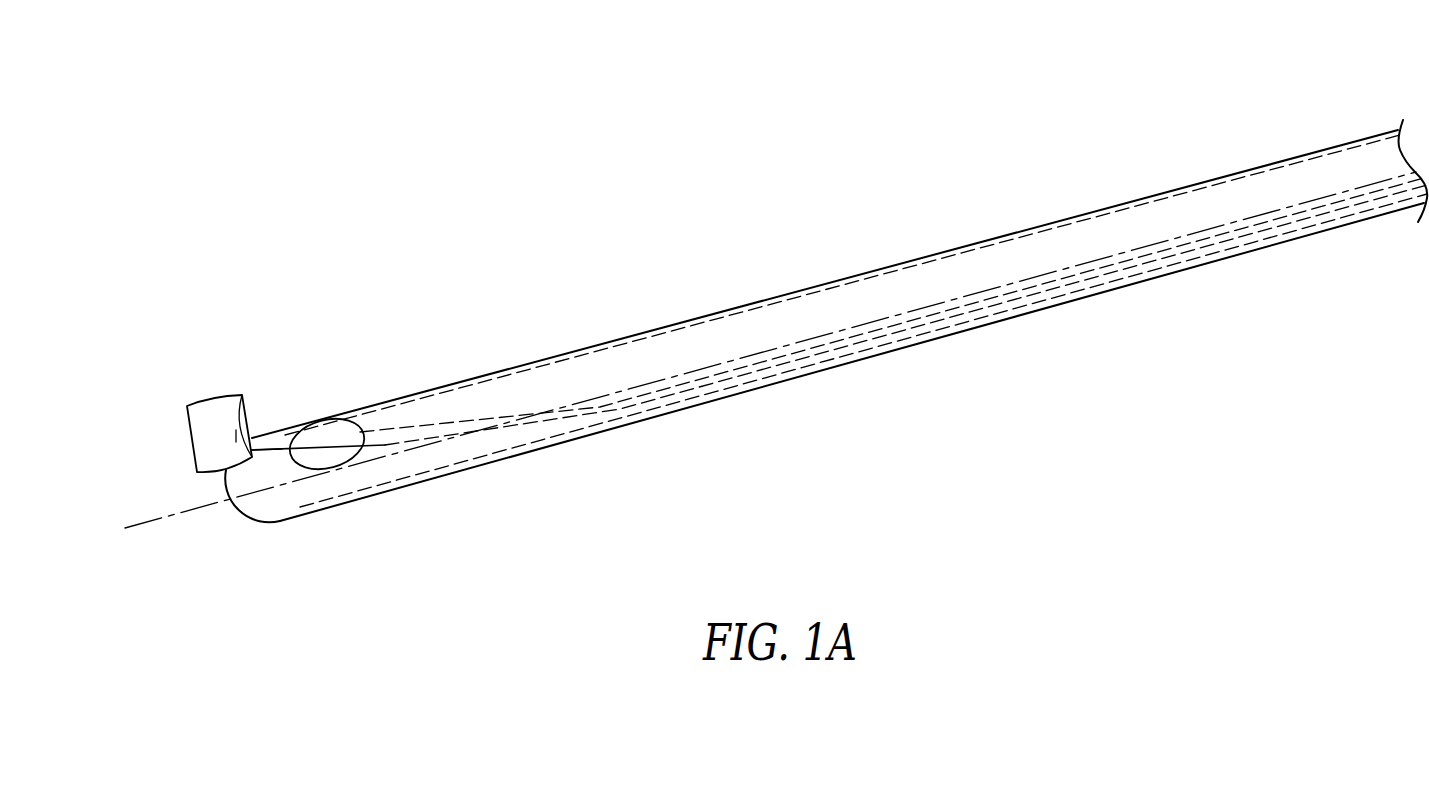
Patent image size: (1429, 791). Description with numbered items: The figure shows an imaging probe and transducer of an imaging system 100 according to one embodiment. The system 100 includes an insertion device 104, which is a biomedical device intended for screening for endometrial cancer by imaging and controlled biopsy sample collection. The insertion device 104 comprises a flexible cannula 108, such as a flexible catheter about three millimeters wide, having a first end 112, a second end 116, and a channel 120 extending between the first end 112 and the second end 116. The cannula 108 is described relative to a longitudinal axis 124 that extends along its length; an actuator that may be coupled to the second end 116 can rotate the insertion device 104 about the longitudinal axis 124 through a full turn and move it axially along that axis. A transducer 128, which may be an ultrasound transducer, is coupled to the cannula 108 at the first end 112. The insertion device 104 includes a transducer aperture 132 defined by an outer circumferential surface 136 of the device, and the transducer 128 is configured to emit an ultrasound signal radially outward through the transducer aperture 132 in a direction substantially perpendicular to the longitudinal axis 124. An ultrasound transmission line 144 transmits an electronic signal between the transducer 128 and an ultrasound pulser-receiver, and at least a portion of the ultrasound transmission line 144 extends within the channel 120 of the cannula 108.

The system 100 is at (245, 168).
The insertion device 104 is at (319, 527).
The flexible cannula 108 is at (1245, 172).
The first end 112 is at (250, 510).
The second end 116 is at (1370, 155).
The channel 120 is at (763, 303).
The longitudinal axis 124 is at (150, 520).
The transducer 128 is at (210, 428).
The transducer aperture 132 is at (352, 417).
The outer circumferential surface 136 is at (370, 422).
The ultrasound transmission line 144 is at (273, 438).